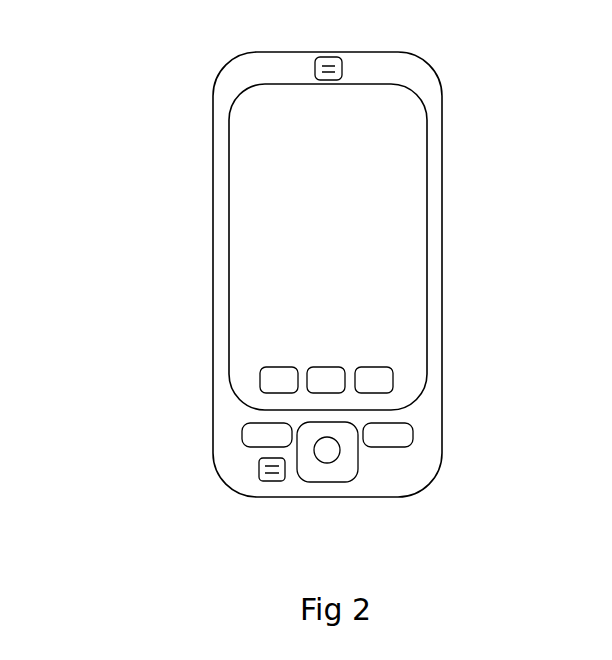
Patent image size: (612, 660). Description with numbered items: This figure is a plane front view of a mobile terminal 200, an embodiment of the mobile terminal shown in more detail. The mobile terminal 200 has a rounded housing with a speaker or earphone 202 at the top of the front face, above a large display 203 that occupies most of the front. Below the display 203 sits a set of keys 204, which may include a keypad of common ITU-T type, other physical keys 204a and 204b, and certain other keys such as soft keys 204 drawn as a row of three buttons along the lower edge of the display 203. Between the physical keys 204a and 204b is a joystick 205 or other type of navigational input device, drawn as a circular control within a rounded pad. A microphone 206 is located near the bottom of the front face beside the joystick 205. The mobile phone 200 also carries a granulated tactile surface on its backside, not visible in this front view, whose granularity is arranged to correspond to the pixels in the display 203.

The mobile terminal 200 is at (200, 113).
The speaker or earphone 202 is at (325, 56).
The display 203 is at (427, 173).
The set of keys 204 is at (240, 381).
The physical key 204a is at (413, 437).
The physical key 204b is at (240, 437).
The joystick 205 is at (358, 456).
The microphone 206 is at (266, 484).